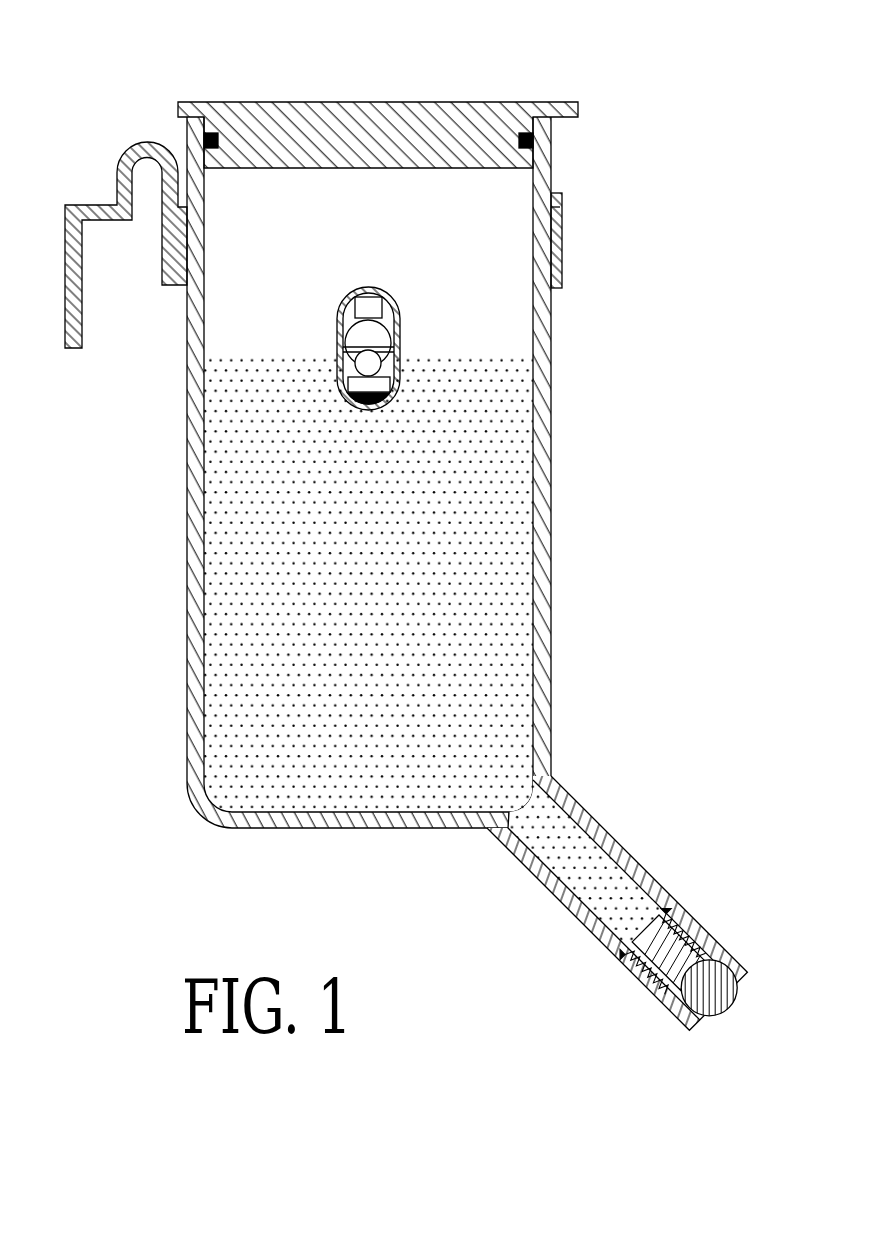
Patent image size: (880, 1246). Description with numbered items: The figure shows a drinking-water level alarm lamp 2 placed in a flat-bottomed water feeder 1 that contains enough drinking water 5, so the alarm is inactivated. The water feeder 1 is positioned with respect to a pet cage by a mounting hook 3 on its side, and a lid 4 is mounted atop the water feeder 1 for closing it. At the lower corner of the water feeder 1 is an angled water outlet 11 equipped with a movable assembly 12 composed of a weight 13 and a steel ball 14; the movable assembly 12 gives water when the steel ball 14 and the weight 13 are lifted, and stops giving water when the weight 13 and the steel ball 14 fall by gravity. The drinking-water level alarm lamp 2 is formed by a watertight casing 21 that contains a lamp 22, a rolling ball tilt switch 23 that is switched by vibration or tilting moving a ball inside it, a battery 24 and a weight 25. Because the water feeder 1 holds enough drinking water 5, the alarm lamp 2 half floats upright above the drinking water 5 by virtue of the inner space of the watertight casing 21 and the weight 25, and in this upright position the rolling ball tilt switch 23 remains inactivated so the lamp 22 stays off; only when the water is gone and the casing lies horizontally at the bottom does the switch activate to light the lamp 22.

The water feeder 1 is at (543, 537).
The water outlet 11 is at (608, 830).
The movable assembly 12 is at (667, 997).
The weight 13 is at (672, 935).
The steel ball 14 is at (712, 1000).
The drinking-water level alarm lamp 2 is at (368, 349).
The watertight casing 21 is at (390, 295).
The lamp 22 is at (367, 300).
The rolling ball tilt switch 23 is at (363, 358).
The battery 24 is at (382, 383).
The weight 25 is at (380, 405).
The mounting hook 3 is at (73, 312).
The lid 4 is at (378, 118).
The drinking water 5 is at (245, 608).